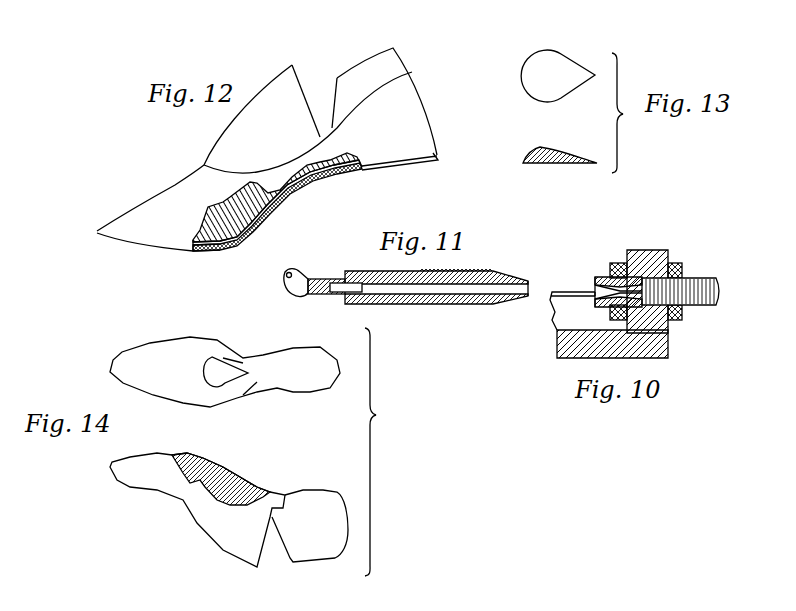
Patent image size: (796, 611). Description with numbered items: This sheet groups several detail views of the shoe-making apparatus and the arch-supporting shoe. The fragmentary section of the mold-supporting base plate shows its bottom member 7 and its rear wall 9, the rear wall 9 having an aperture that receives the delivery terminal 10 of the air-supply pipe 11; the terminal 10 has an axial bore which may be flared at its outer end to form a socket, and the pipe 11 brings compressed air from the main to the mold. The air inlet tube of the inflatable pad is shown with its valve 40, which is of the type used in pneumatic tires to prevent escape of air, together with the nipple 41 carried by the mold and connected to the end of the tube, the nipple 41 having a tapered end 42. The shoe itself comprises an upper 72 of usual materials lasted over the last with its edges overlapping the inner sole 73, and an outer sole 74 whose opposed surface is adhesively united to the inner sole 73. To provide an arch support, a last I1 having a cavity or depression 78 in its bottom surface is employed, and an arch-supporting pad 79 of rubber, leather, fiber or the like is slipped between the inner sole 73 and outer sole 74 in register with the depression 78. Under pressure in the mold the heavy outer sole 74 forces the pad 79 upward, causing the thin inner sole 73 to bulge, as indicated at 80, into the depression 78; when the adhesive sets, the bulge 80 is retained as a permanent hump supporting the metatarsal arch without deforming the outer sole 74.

In FIG. 10, the bottom member 7 is at (561, 347).
In FIG. 10, the rear wall 9 is at (668, 253).
In FIG. 10, the delivery terminal 10 is at (596, 281).
In FIG. 10, the air-supply pipe 11 is at (702, 277).
In FIG. 11, the valve 40 is at (338, 280).
In FIG. 11, the nipple 41 is at (447, 300).
In FIG. 11, the tapered end 42 is at (503, 273).
In FIG. 12, the upper 72 is at (178, 186).
In FIG. 12, the inner sole 73 is at (203, 237).
In FIG. 12, the outer sole 74 is at (207, 252).
In FIG. 14, the cavity or depression 78 is at (205, 371).
In FIG. 12, the arch-supporting pad 79 is at (297, 187).
In FIG. 13, the arch-supporting pad 79 is at (571, 70).
In FIG. 12, the bulge 80 is at (303, 170).
In FIG. 12, the last I1 is at (390, 63).
In FIG. 14, the last I1 is at (313, 469).